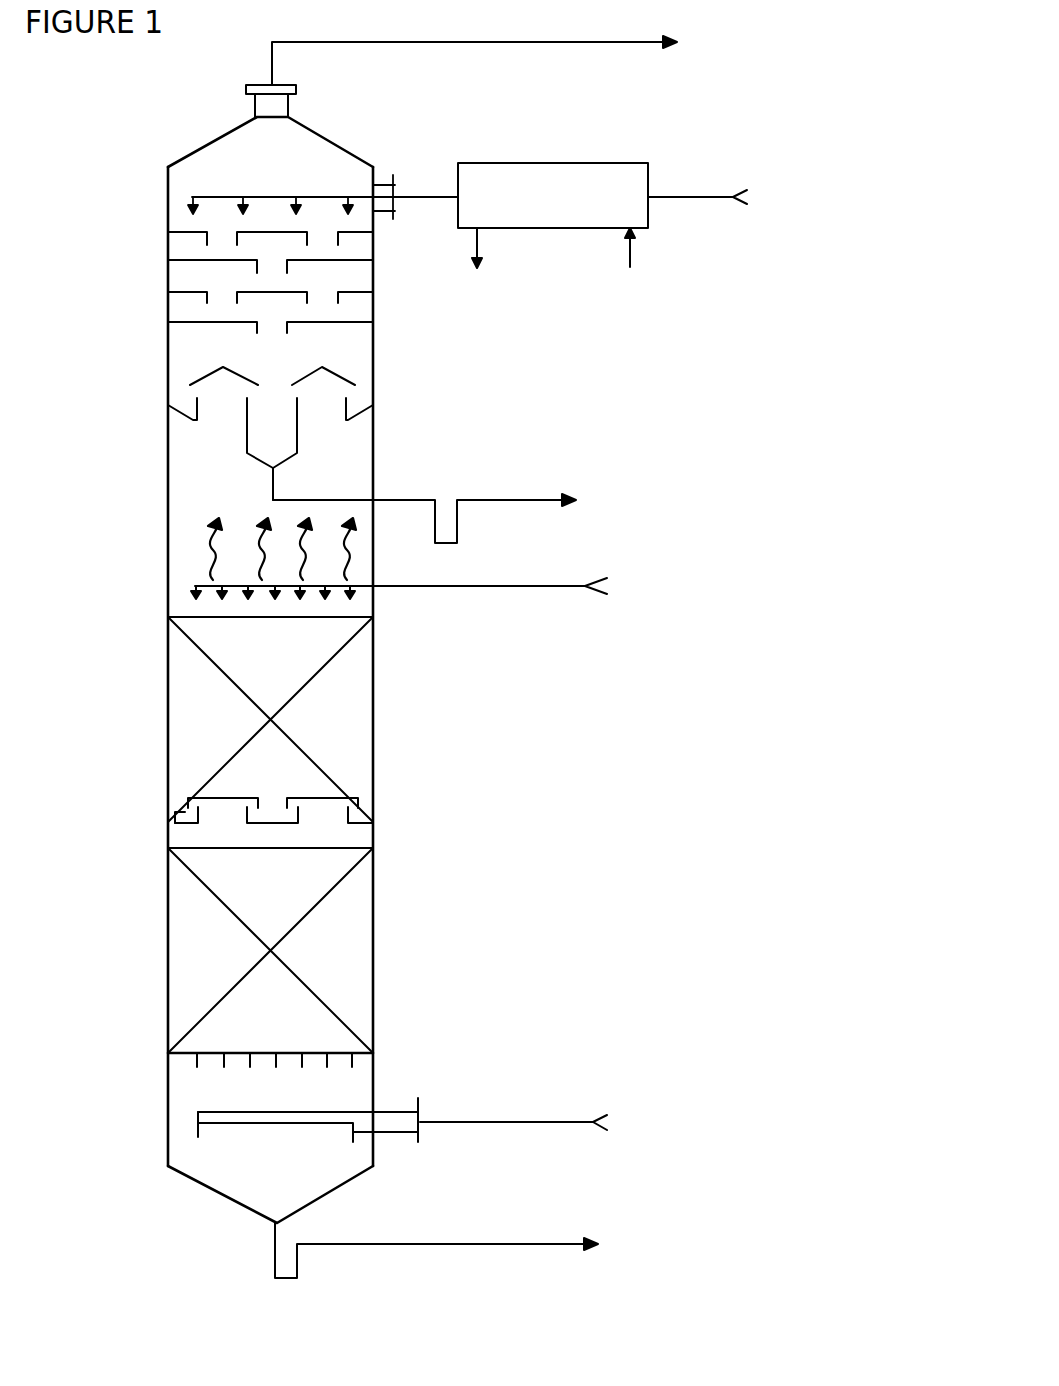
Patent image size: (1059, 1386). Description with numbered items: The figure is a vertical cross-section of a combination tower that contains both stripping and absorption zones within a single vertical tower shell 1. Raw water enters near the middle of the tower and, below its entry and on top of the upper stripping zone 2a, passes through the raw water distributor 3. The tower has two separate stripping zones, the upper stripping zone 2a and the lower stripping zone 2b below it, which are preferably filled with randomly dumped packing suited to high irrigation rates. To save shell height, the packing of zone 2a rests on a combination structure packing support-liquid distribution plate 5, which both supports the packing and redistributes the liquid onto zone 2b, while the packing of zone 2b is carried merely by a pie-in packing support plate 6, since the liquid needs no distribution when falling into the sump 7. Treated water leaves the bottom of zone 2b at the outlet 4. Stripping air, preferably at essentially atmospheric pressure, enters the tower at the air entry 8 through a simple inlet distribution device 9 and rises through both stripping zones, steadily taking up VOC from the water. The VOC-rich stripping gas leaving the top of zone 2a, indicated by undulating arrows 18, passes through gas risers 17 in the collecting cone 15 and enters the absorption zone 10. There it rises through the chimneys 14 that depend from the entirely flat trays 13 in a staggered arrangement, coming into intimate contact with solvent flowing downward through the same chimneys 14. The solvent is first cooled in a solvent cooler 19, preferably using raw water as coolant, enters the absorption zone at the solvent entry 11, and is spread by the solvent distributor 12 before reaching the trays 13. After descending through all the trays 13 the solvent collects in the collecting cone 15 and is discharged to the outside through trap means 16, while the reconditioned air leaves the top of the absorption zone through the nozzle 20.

The vertical tower shell 1 is at (378, 833).
The stripping zone 2a is at (358, 735).
The stripping zone 2b is at (342, 940).
The raw water distributor 3 is at (348, 578).
The treated water outlet 4 is at (268, 1233).
The combination structure packing support-liquid distribution plate 5 is at (182, 814).
The packing support plate 6 is at (207, 1048).
The sump 7 is at (205, 1157).
The air entry 8 is at (427, 1113).
The inlet distribution device 9 is at (327, 1133).
The absorption zone 10 is at (207, 265).
The solvent entry 11 is at (381, 180).
The solvent distributor 12 is at (212, 192).
The trays 13 is at (315, 328).
The chimneys 14 is at (262, 343).
The collecting cone 15 is at (252, 462).
The trap means 16 is at (443, 488).
The gas risers 17 is at (315, 417).
The undulating arrows 18 is at (208, 565).
The solvent cooler 19 is at (560, 157).
The nozzle 20 is at (292, 105).